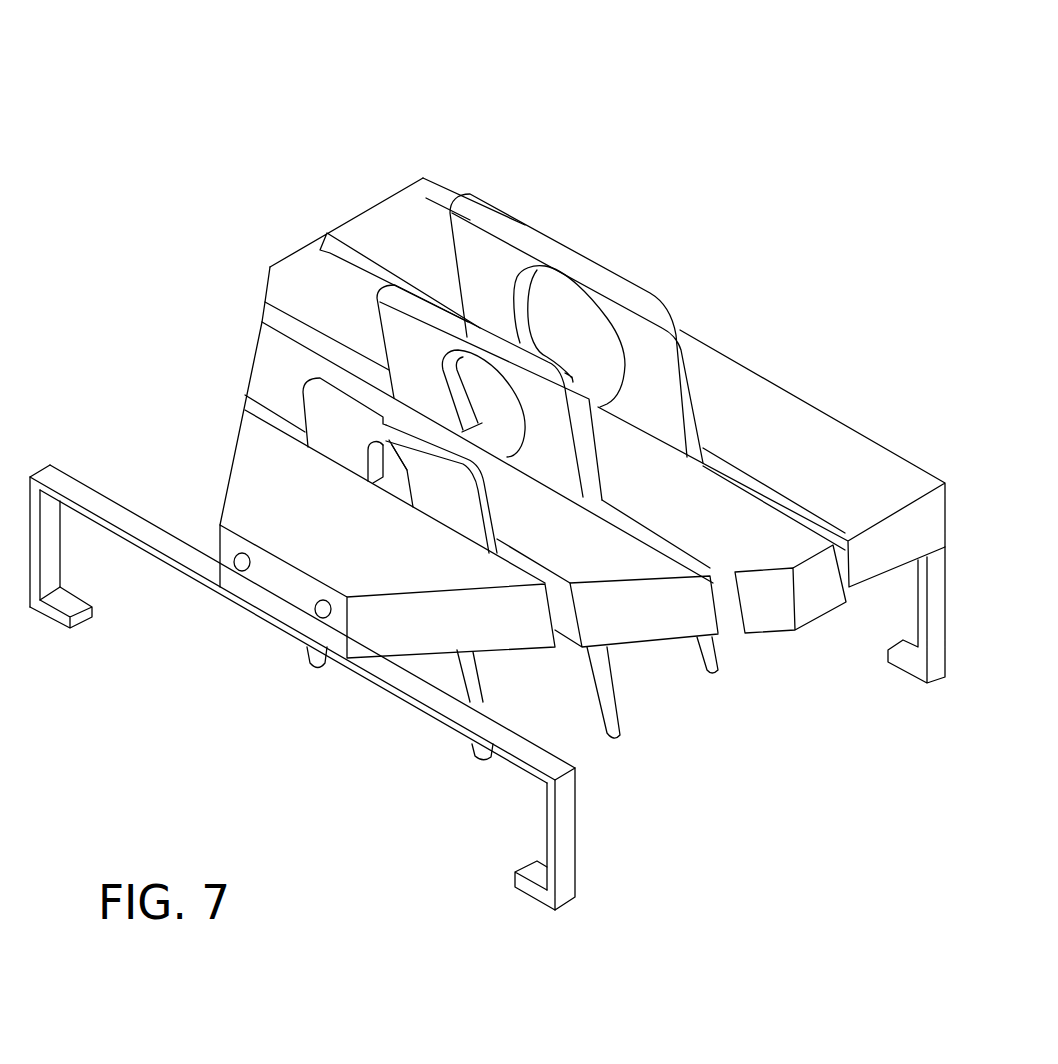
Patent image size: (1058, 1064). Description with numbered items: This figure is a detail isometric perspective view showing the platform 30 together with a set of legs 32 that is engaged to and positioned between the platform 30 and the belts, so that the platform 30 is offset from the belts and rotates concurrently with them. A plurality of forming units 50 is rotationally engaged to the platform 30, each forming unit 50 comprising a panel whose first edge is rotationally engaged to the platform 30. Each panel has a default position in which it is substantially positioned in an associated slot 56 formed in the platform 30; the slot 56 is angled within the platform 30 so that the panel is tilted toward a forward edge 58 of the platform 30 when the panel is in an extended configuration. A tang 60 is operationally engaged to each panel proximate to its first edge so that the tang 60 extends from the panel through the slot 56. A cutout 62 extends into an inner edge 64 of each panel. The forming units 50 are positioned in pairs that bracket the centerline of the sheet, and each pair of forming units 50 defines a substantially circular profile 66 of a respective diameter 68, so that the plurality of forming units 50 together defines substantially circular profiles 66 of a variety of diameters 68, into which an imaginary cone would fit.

The platform 30 is at (738, 413).
The set of legs 32 is at (520, 869).
The forming units 50 is at (340, 393).
The slot 56 is at (725, 581).
The forward edge 58 is at (277, 578).
The tang 60 is at (705, 675).
The cutout 62 is at (393, 467).
The inner edge 64 is at (407, 488).
The substantially circular profile 66 is at (548, 320).
The diameter 68 is at (490, 393).